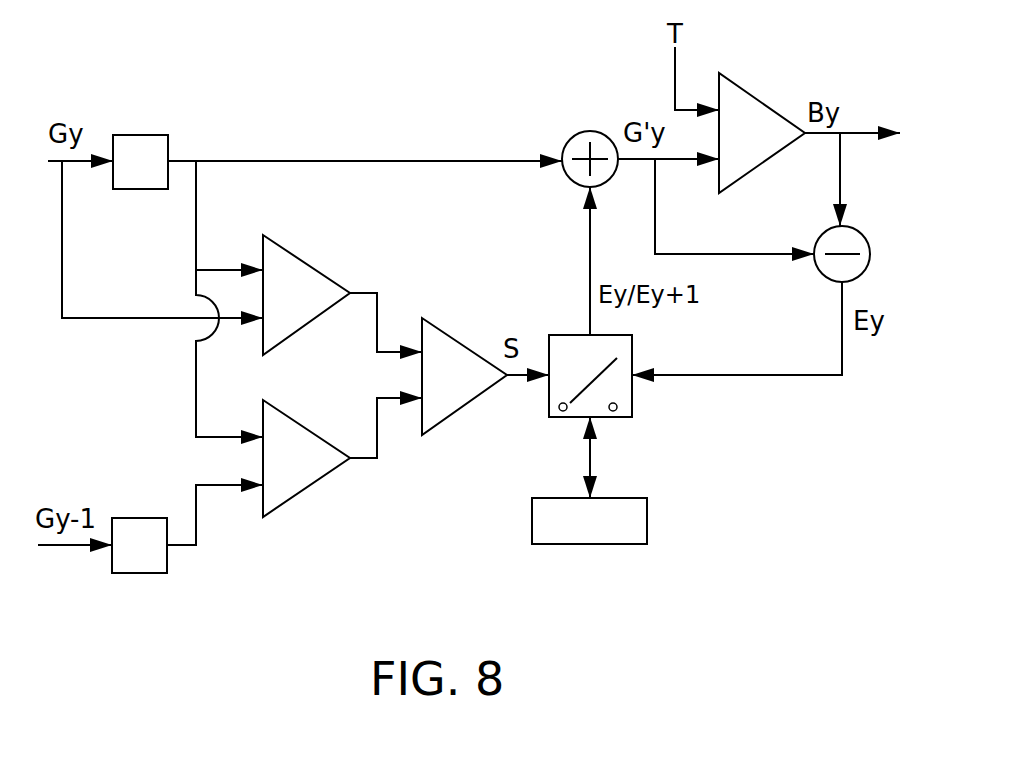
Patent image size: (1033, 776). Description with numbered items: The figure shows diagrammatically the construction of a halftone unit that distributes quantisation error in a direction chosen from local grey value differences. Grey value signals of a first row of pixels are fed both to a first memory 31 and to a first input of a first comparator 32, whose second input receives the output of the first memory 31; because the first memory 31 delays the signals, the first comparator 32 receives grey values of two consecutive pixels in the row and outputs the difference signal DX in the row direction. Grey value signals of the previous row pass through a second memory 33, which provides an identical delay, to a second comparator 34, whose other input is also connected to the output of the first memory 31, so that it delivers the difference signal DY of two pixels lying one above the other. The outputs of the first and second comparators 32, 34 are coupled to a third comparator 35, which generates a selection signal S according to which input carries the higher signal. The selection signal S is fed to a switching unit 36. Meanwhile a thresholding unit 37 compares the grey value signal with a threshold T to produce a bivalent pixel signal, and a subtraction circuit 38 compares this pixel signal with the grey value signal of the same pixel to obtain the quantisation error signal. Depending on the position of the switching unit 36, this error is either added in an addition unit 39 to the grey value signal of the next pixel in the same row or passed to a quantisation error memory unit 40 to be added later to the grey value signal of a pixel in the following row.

The first memory 31 is at (168, 145).
The first comparator 32 is at (308, 327).
The second memory 33 is at (165, 573).
The second comparator 34 is at (308, 490).
The third comparator 35 is at (457, 410).
The switching unit 36 is at (632, 397).
The thresholding unit 37 is at (752, 92).
The subtraction circuit 38 is at (822, 278).
The addition unit 39 is at (573, 135).
The quantisation error memory unit 40 is at (647, 505).